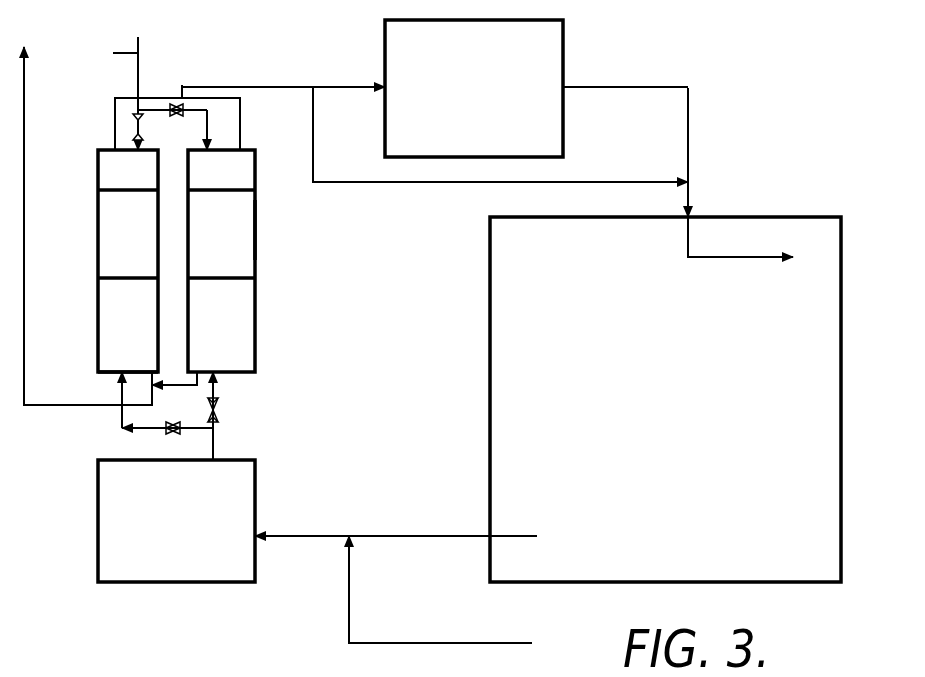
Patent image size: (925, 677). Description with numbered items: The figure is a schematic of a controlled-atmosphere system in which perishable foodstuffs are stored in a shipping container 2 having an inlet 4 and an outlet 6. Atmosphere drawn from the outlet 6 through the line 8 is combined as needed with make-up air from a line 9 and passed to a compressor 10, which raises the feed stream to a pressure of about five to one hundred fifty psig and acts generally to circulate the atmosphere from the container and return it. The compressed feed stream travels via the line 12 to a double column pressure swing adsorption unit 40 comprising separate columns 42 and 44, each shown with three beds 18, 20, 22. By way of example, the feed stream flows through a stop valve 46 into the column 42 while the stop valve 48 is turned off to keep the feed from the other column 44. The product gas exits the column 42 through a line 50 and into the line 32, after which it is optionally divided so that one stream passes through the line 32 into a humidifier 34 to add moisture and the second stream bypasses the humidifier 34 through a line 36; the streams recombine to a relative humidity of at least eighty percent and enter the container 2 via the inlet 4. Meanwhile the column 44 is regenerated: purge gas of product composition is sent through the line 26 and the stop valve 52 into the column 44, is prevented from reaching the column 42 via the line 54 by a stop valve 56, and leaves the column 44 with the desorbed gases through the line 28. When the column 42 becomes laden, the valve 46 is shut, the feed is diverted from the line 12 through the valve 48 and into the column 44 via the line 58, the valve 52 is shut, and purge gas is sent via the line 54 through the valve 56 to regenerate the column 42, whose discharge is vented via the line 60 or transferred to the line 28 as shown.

The shipping container 2 is at (508, 283).
The inlet 4 is at (690, 213).
The outlet 6 is at (492, 534).
The line 8 is at (423, 537).
The line 9 is at (350, 589).
The compressor 10 is at (180, 537).
The line 12 is at (215, 449).
The bed 18 is at (115, 337).
The bed 20 is at (105, 258).
The bed 22 is at (117, 167).
The line 26 is at (101, 64).
The line 28 is at (27, 313).
The line 32 is at (320, 87).
The humidifier 34 is at (533, 58).
The line 36 is at (473, 182).
The double column pressure swing adsorption unit 40 is at (272, 318).
The column 42 is at (258, 240).
The column 44 is at (96, 265).
The stop valve 46 is at (220, 415).
The stop valve 48 is at (170, 430).
The line 50 is at (217, 97).
The stop valve 52 is at (127, 122).
The line 54 is at (150, 108).
The stop valve 56 is at (185, 112).
The line 58 is at (122, 423).
The line 60 is at (180, 390).